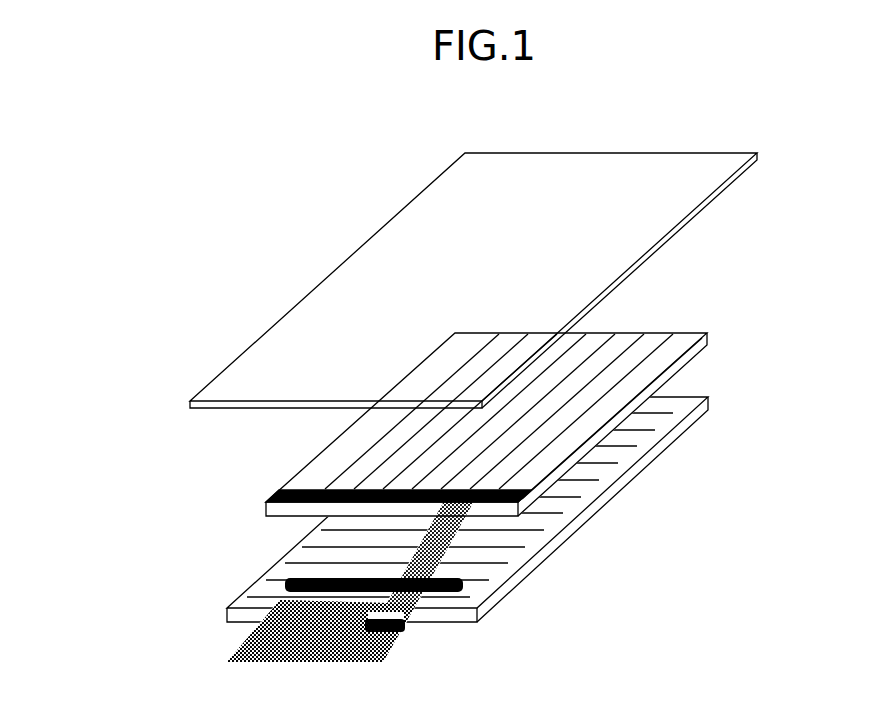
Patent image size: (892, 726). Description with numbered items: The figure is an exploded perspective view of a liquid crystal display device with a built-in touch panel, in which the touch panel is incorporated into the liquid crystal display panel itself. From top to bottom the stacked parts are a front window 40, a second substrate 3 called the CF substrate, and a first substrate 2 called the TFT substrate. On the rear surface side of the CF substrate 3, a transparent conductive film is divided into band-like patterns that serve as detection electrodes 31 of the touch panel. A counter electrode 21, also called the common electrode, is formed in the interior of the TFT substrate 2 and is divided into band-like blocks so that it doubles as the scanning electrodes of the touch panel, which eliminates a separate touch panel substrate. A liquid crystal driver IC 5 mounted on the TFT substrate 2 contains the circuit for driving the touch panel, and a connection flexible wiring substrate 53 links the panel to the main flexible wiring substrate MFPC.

The front window 40 is at (463, 200).
The second substrate 3 is at (704, 331).
The detection electrodes 31 is at (638, 375).
The first substrate 2 is at (272, 588).
The counter electrode 21 is at (589, 478).
The liquid crystal driver IC 5 is at (459, 592).
The connection flexible wiring substrate 53 is at (415, 610).
The main flexible wiring substrate MFPC is at (290, 638).